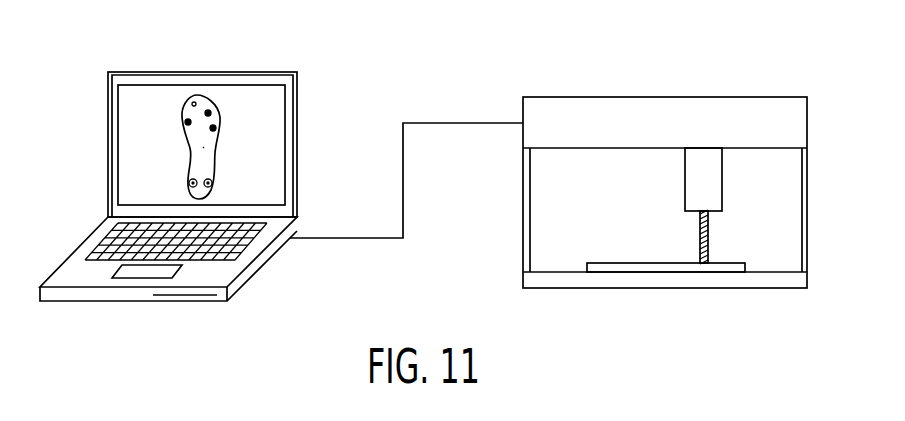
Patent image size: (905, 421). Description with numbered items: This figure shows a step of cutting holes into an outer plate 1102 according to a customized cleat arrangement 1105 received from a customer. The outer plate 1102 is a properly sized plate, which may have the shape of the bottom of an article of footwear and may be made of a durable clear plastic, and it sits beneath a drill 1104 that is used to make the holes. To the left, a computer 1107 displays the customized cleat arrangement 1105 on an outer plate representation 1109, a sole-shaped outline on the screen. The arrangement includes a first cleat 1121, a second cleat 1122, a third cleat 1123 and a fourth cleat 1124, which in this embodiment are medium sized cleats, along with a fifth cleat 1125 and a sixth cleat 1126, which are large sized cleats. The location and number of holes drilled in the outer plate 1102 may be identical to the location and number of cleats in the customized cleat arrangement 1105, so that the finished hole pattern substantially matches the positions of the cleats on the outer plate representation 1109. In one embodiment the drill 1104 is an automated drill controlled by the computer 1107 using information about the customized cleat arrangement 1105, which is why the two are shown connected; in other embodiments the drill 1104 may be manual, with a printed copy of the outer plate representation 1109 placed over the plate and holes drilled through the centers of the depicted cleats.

The outer plate 1102 is at (610, 268).
The drill 1104 is at (734, 120).
The customized cleat arrangement 1105 is at (203, 147).
The computer 1107 is at (190, 303).
The outer plate representation 1109 is at (197, 96).
The first cleat 1121 is at (215, 128).
The second cleat 1122 is at (210, 112).
The third cleat 1123 is at (192, 102).
The fourth cleat 1124 is at (188, 122).
The fifth cleat 1125 is at (189, 183).
The sixth cleat 1126 is at (212, 183).